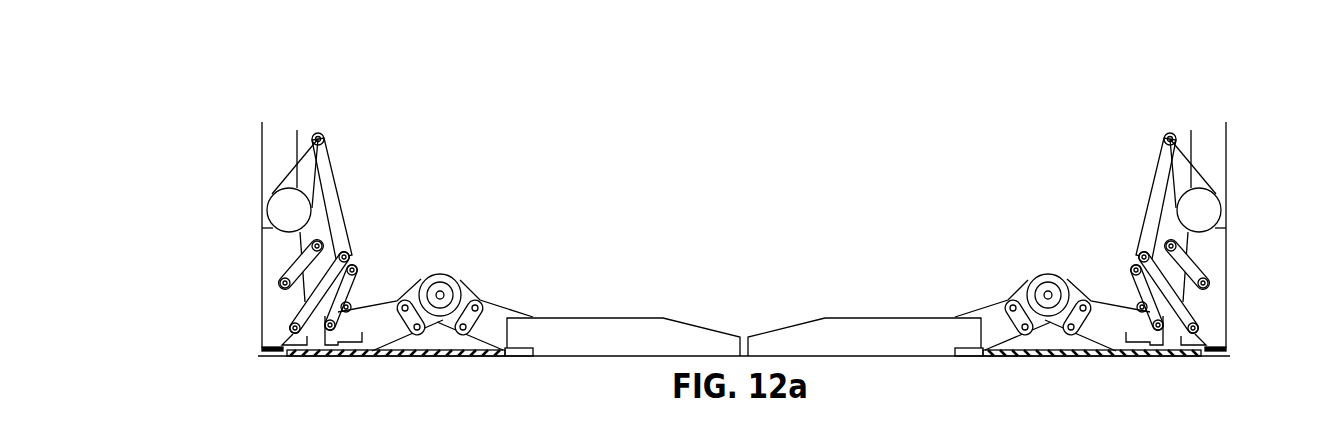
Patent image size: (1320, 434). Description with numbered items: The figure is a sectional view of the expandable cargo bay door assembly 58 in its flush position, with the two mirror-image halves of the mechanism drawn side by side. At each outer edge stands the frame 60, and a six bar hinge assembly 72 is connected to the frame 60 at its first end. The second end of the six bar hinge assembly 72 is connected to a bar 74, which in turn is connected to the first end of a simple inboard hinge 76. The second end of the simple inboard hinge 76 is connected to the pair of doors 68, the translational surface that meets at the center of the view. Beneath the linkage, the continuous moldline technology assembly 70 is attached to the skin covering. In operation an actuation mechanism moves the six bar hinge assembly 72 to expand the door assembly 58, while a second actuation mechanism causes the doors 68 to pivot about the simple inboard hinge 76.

The door assembly 58 is at (754, 145).
The frame 60 is at (275, 125).
The pair of doors 68 is at (835, 316).
The continuous moldline technology (CMT) assembly 70 is at (468, 357).
The six bar hinge assembly 72 is at (337, 185).
The bar 74 is at (380, 298).
The simple inboard hinge 76 is at (440, 272).